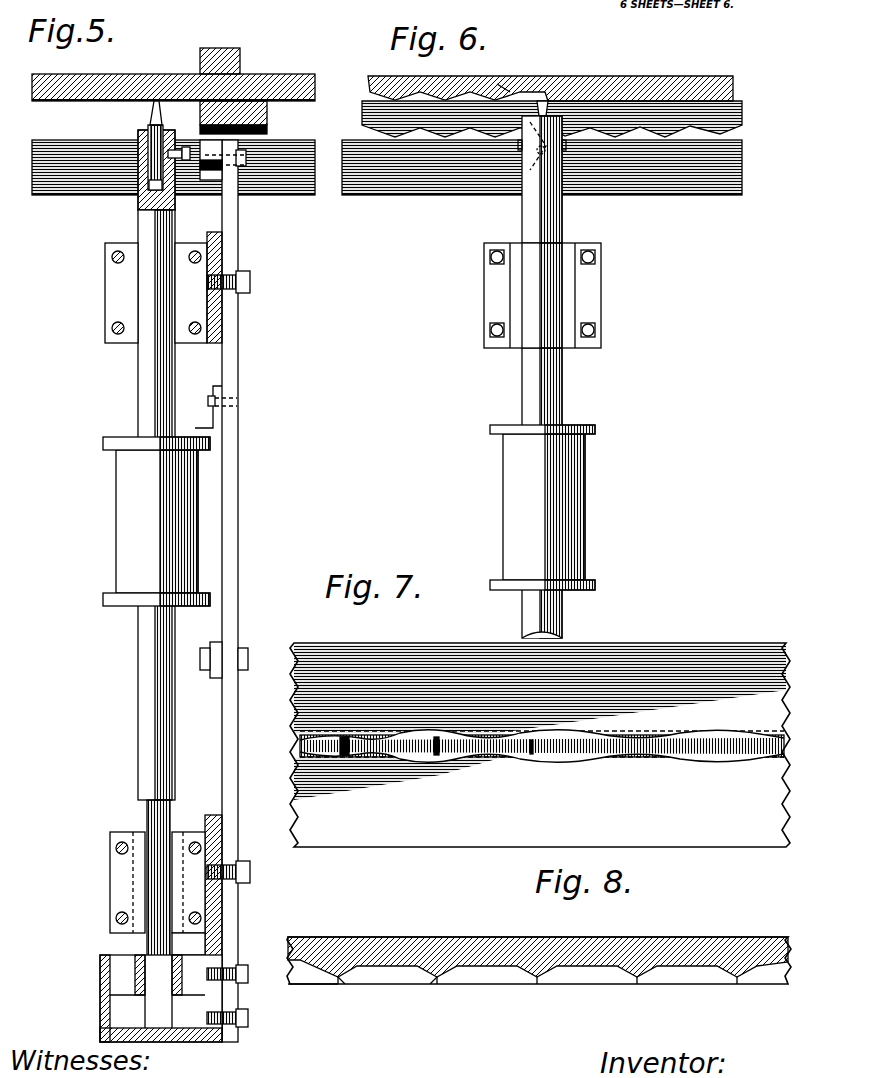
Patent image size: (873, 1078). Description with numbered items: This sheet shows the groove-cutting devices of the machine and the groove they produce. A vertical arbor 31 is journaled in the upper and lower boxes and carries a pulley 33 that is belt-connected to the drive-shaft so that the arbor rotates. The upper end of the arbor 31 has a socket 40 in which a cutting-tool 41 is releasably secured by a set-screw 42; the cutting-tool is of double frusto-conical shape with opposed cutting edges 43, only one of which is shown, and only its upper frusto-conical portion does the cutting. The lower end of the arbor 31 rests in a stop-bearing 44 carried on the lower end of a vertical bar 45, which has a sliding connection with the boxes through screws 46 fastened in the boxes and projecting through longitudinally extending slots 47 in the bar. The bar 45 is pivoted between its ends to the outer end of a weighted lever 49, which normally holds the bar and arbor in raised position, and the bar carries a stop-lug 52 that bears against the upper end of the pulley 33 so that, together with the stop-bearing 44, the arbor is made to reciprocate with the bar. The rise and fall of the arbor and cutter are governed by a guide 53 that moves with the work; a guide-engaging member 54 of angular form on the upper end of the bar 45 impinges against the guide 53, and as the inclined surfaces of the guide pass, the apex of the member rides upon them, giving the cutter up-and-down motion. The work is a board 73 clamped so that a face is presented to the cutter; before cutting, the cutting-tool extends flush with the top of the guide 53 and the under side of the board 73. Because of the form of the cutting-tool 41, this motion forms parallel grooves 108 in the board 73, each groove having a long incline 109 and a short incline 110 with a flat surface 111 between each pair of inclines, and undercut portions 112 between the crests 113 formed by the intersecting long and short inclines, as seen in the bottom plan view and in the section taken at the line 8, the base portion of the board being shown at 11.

In FIG. 5, the section line 8 is at (290, 742).
In FIG. 8, the floor base 11 is at (340, 988).
In FIG. 5, the arbor 31 is at (150, 381).
In FIG. 6, the arbor 31 is at (530, 381).
In FIG. 5, the pulley 33 is at (104, 598).
In FIG. 6, the pulley 33 is at (596, 584).
In FIG. 5, the socket 40 is at (137, 157).
In FIG. 5, the cutting-tool 41 is at (144, 134).
In FIG. 5, the set-screw 42 is at (178, 147).
In FIG. 5, the cutting edge 43 is at (157, 100).
In FIG. 6, the cutting edge 43 is at (548, 98).
In FIG. 5, the stop-bearing 44 is at (115, 1021).
In FIG. 5, the vertical bar 45 is at (252, 906).
In FIG. 6, the vertical bar 45 is at (563, 400).
In FIG. 5, the screw 46 is at (251, 281).
In FIG. 5, the slot 47 is at (232, 308).
In FIG. 5, the lever 49 is at (210, 674).
In FIG. 5, the stop-lug 52 is at (201, 426).
In FIG. 5, the guide 53 is at (268, 127).
In FIG. 6, the guide 53 is at (742, 107).
In FIG. 5, the guide-engaging member 54 is at (222, 162).
In FIG. 6, the guide-engaging member 54 is at (564, 150).
In FIG. 5, the board 73 is at (282, 76).
In FIG. 6, the board 73 is at (674, 80).
In FIG. 7, the board 73 is at (540, 745).
In FIG. 8, the board 73 is at (603, 938).
In FIG. 6, the groove 108 is at (497, 84).
In FIG. 7, the groove 108 is at (388, 745).
In FIG. 8, the groove 108 is at (388, 960).
In FIG. 7, the long incline 109 is at (350, 742).
In FIG. 8, the long incline 109 is at (358, 966).
In FIG. 7, the short incline 110 is at (420, 742).
In FIG. 8, the short incline 110 is at (455, 978).
In FIG. 8, the flat surface 111 is at (402, 968).
In FIG. 7, the undercut portion 112 is at (505, 733).
In FIG. 7, the crest 113 is at (432, 760).
In FIG. 8, the crest 113 is at (438, 982).